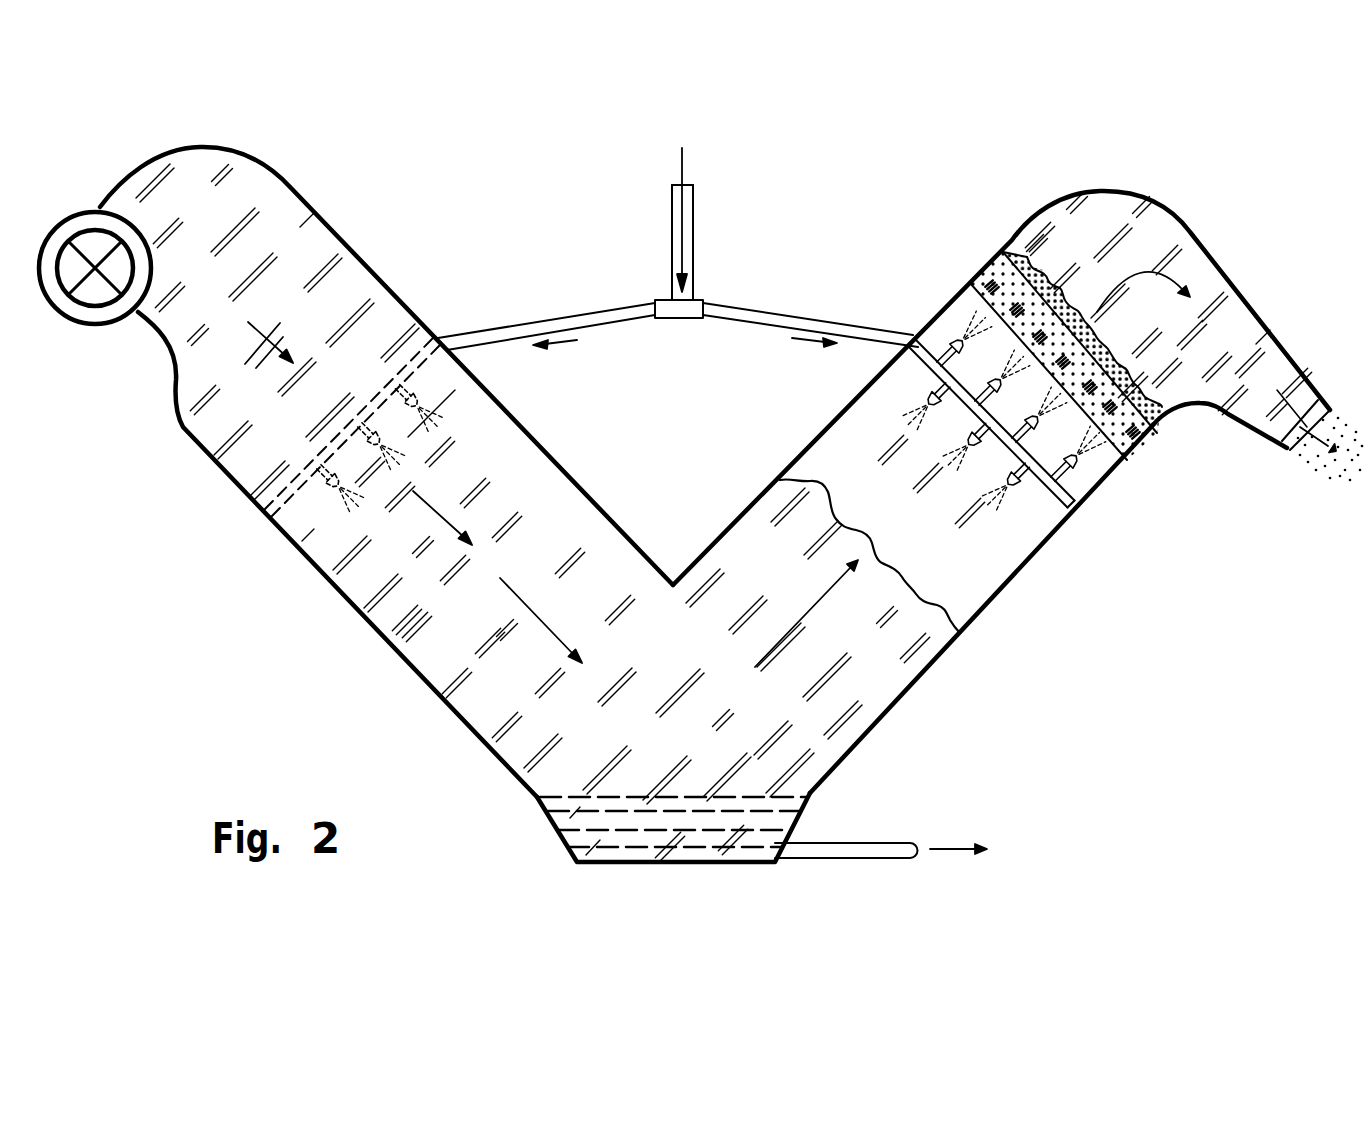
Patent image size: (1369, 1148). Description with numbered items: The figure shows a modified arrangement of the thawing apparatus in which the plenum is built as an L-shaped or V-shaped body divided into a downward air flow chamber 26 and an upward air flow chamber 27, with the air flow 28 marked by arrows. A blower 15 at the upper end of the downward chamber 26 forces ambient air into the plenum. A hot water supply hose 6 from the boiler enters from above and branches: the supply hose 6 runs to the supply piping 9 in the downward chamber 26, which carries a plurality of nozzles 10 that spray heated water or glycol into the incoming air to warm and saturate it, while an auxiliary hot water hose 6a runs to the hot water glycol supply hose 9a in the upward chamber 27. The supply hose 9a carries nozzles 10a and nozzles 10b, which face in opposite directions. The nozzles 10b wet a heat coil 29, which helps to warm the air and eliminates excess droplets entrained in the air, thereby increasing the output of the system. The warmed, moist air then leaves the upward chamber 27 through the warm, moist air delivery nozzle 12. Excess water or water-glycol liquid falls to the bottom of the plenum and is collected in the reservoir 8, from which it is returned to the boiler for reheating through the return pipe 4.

The return hose 4 is at (850, 843).
The hot water supply hose 6 is at (675, 263).
The auxiliary hot water hose 6a is at (807, 320).
The catch reservoir 8 is at (680, 843).
The tubular member 9 is at (270, 512).
The hot water glycol supply hose 9a is at (1072, 505).
The nozzles 10 is at (325, 485).
The nozzles 10a is at (1022, 490).
The nozzles 10b is at (1090, 483).
The warm, moist air delivery nozzle 12 is at (1302, 372).
The blower 15 is at (84, 327).
The downward air flow chamber 26 is at (383, 636).
The upward air flow chamber 27 is at (960, 633).
The air flow 28 is at (808, 603).
The heat coil 29 is at (1147, 447).